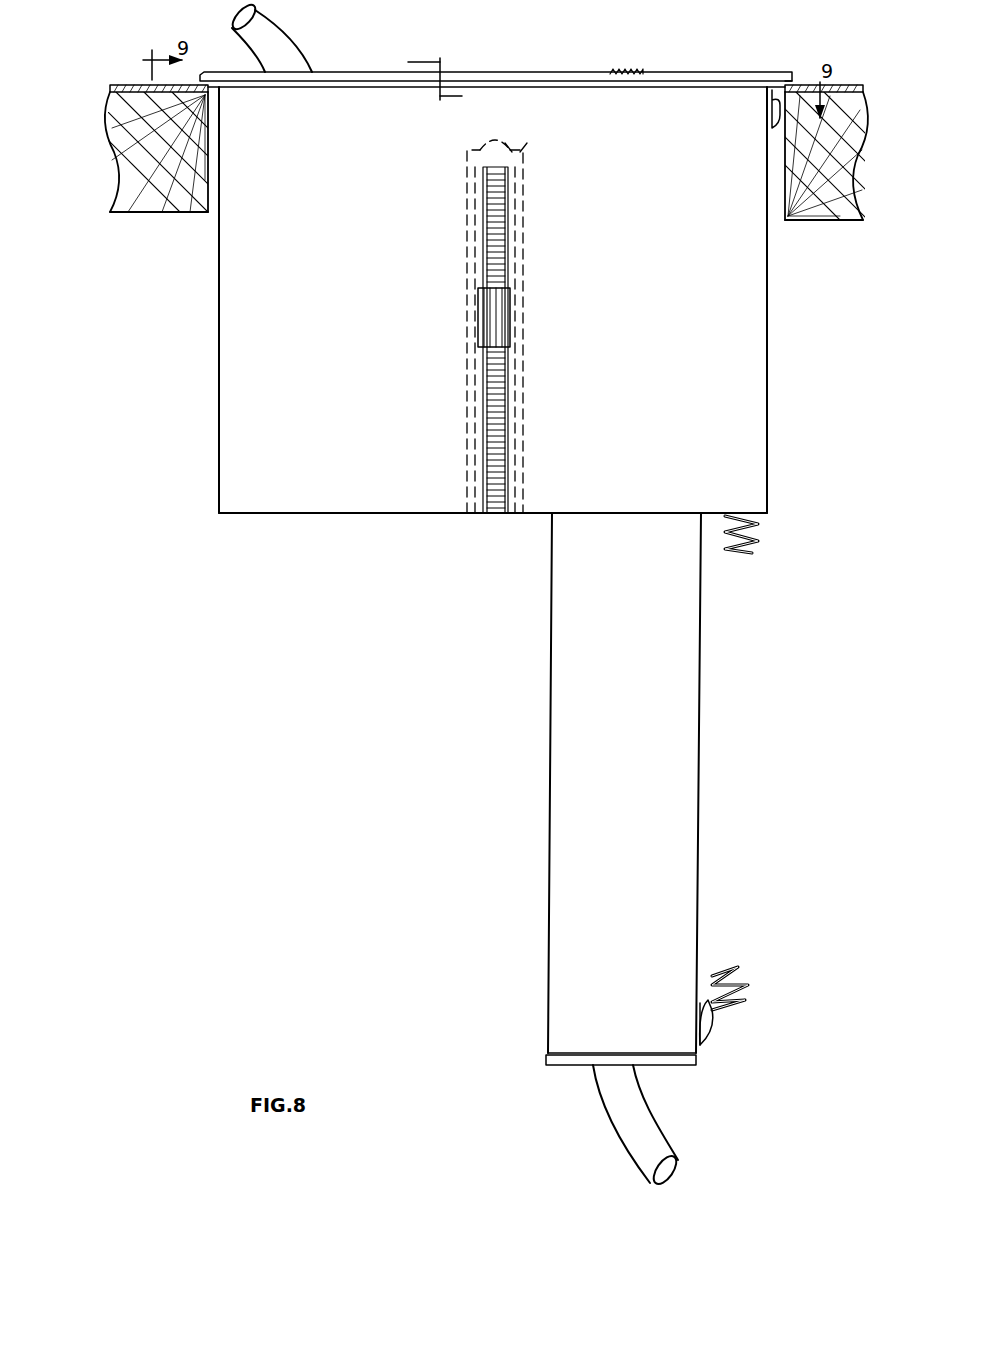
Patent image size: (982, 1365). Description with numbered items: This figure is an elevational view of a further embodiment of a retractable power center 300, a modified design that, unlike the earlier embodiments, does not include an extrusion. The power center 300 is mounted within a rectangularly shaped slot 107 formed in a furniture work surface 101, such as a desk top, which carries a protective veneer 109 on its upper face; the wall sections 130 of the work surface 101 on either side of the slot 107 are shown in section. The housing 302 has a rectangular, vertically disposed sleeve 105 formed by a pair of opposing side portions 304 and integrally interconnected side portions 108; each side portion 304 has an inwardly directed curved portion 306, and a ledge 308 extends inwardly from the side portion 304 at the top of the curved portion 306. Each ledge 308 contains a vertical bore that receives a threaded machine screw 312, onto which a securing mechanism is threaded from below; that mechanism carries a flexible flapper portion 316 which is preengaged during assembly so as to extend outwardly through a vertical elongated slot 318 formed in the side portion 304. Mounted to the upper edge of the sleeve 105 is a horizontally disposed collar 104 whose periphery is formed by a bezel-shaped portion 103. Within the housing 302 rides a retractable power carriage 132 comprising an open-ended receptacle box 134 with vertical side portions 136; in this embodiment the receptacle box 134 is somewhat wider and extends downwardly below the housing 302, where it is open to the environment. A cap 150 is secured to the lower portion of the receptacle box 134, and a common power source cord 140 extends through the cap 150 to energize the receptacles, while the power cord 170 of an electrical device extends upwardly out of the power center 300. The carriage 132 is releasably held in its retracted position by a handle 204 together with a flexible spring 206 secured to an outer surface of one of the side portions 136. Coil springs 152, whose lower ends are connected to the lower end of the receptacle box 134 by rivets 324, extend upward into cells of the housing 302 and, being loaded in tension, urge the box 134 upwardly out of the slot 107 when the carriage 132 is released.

The work surface 101 is at (118, 214).
The bezel-shaped portion 103 is at (786, 80).
The collar 104 is at (532, 72).
The sleeve 105 is at (293, 514).
The slot 107 is at (214, 210).
The side portion 108 is at (217, 316).
The veneer 109 is at (124, 85).
The wall section 130 is at (143, 214).
The power carriage 132 is at (568, 825).
The receptacle box 134 is at (546, 1036).
The side portion 136 is at (645, 688).
The power source cord 140 is at (615, 1134).
The cap 150 is at (567, 1065).
The coil spring 152 is at (742, 975).
The power cord 170 is at (296, 34).
The handle 204 is at (643, 70).
The flexible spring 206 is at (770, 116).
The power center 300 is at (205, 528).
The housing 302 is at (501, 334).
The side portion 304 is at (368, 326).
The curved portion 306 is at (466, 420).
The ledge 308 is at (522, 146).
The machine screw 312 is at (478, 141).
The flapper portion 316 is at (480, 346).
The slot 318 is at (500, 514).
The rivet 324 is at (709, 1032).